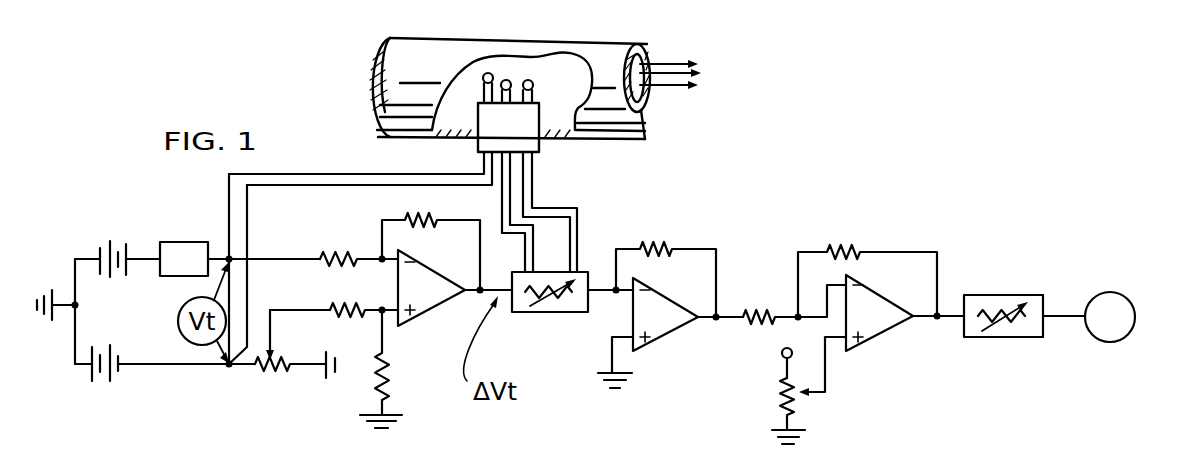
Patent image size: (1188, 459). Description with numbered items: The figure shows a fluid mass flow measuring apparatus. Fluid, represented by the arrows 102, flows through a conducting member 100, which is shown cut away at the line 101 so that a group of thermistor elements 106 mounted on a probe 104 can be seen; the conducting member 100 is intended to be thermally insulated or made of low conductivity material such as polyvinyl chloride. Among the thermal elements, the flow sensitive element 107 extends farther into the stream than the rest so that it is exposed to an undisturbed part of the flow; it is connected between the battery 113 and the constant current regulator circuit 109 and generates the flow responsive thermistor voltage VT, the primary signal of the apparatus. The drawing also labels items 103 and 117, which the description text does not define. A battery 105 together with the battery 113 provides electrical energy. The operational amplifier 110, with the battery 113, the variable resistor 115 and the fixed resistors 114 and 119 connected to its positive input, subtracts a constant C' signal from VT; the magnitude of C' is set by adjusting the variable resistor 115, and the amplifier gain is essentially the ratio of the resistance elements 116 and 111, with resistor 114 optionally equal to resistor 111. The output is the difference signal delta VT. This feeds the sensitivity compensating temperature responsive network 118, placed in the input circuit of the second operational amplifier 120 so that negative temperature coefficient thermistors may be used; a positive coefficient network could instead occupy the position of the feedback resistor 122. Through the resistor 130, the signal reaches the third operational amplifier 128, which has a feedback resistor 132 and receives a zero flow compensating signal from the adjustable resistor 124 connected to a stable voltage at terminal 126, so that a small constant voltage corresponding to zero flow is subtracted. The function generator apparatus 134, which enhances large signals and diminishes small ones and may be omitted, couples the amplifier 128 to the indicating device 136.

The conducting member 100 is at (457, 38).
The cut-away line 101 is at (540, 56).
The arrows 102 is at (668, 64).
The probe 104 is at (539, 152).
The thermistor elements 106 is at (576, 89).
The flow sensitive element 107 is at (484, 79).
The sensor leads 117 is at (599, 202).
The ground 103 is at (50, 320).
The battery 105 is at (117, 244).
The constant current regulator circuit 109 is at (203, 242).
The battery 113 is at (112, 378).
The resistor 111 is at (338, 252).
The fixed resistor 114 is at (338, 305).
The variable resistor 115 is at (272, 356).
The resistor 116 is at (414, 215).
The fixed resistor 119 is at (384, 367).
The operational amplifier 110 is at (406, 258).
The sensitivity compensating temperature responsive network 118 is at (548, 314).
The second operational amplifier 120 is at (655, 338).
The feedback resistor 122 is at (666, 248).
The resistor 130 is at (773, 310).
The resistor 132 is at (846, 252).
The terminal 126 is at (783, 359).
The adjustable resistor 124 is at (783, 408).
The third operational amplifier 128 is at (868, 338).
The function generator apparatus 134 is at (981, 338).
The indicating device 136 is at (1112, 342).